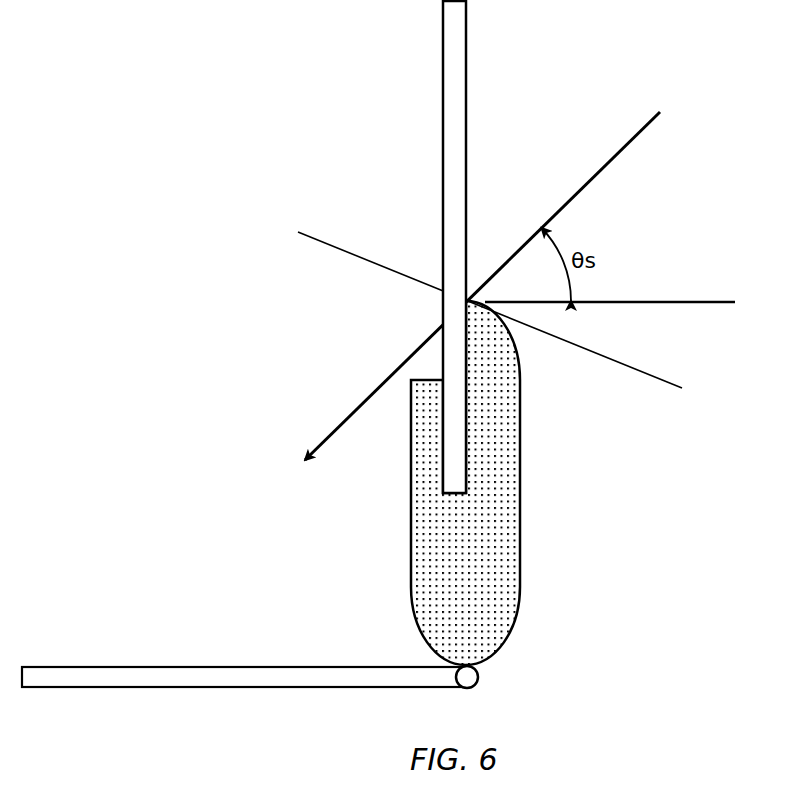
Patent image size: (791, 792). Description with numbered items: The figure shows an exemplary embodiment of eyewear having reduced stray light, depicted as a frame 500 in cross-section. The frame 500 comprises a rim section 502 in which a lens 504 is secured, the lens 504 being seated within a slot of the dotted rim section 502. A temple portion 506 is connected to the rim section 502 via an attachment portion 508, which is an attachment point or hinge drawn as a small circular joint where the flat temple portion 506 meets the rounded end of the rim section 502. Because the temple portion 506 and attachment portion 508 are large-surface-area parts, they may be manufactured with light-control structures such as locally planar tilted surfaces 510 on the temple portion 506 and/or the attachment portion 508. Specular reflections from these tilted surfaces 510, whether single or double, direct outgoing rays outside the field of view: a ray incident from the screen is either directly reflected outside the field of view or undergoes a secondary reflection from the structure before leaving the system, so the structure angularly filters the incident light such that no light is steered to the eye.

The frame 500 is at (333, 106).
The rim section 502 is at (521, 537).
The lens 504 is at (455, 91).
The temple portion 506 is at (222, 678).
The attachment portion 508 is at (470, 683).
The locally planar tilted surfaces 510 is at (245, 666).